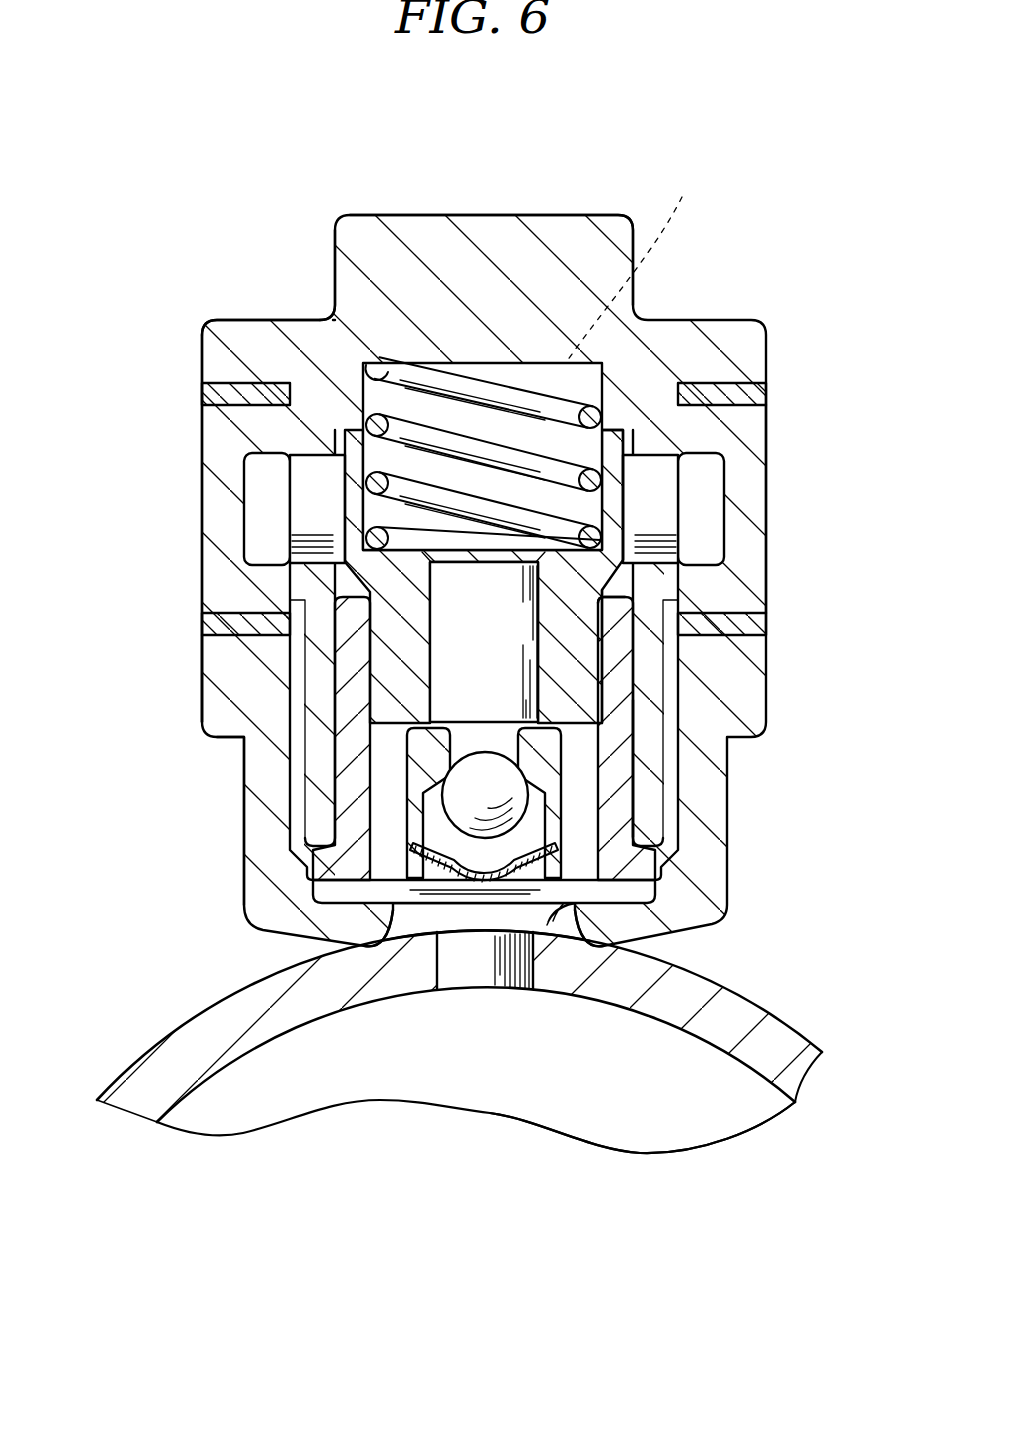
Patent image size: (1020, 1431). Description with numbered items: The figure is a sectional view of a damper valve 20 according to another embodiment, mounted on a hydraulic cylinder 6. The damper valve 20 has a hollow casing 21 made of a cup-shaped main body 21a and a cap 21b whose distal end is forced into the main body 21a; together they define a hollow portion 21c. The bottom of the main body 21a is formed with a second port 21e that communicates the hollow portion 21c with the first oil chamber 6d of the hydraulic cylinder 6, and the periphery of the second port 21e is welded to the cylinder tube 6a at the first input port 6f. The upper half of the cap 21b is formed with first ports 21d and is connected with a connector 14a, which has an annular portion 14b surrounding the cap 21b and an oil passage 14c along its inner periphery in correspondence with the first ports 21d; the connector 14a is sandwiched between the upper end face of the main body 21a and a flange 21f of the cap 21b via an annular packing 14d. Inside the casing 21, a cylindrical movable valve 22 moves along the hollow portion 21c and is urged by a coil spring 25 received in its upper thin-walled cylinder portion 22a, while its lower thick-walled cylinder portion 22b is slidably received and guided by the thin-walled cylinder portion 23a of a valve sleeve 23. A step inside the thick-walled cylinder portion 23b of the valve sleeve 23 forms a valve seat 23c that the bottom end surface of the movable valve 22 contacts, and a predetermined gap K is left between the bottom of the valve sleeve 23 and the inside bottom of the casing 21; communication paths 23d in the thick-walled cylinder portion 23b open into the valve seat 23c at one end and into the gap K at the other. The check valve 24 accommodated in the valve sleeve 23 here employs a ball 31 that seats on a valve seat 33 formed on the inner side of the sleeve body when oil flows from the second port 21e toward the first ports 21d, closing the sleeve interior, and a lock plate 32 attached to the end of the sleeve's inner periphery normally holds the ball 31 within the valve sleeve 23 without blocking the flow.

The hydraulic cylinder 6 is at (130, 1062).
The cylinder tube 6a is at (763, 1048).
The first oil chamber 6d is at (702, 1130).
The first input port 6f is at (467, 963).
The connector 14a is at (771, 542).
The annular portion 14b is at (228, 558).
The oil passage 14c is at (263, 483).
The annular packing 14d is at (220, 396).
The damper valve 20 is at (293, 288).
The casing 21 is at (672, 318).
The main body 21a is at (262, 828).
The cap 21b is at (548, 233).
The hollow portion 21c is at (333, 395).
The first port 21d is at (127, 510).
The second port 21e is at (557, 947).
The flange 21f is at (215, 322).
The movable valve 22 is at (388, 681).
The thin-walled cylinder portion 22a is at (614, 455).
The thick-walled cylinder portion 22b is at (578, 653).
The valve sleeve 23 is at (622, 718).
The thin-walled cylinder portion 23a is at (640, 596).
The thick-walled cylinder portion 23b is at (620, 752).
The valve seat 23c is at (448, 715).
The communication path 23d is at (377, 783).
The check valve 24 is at (548, 856).
The coil spring 25 is at (436, 382).
The ball 31 is at (505, 802).
The lock plate 32 is at (693, 915).
The valve seat 33 is at (460, 787).
The gap K is at (300, 900).